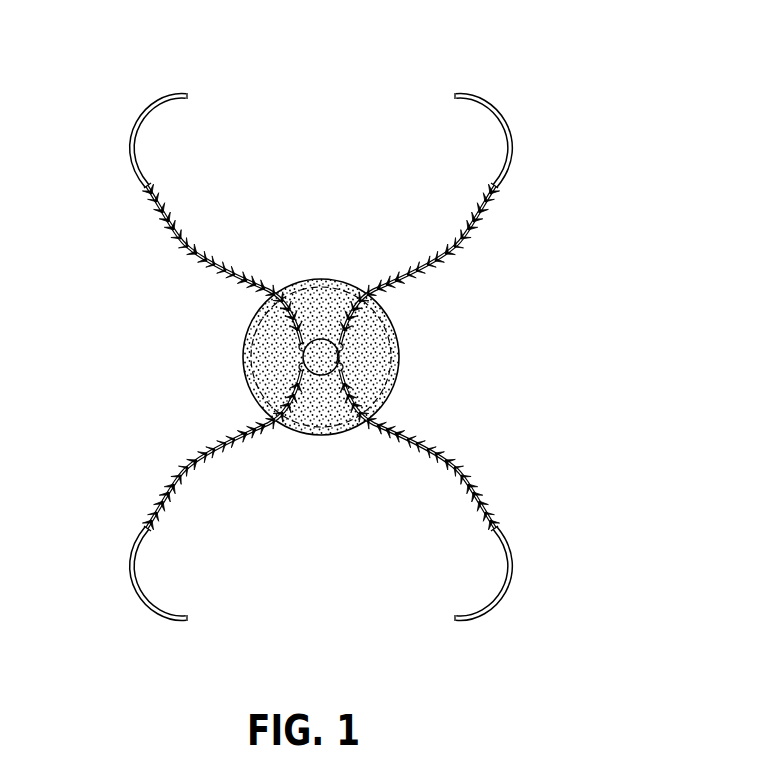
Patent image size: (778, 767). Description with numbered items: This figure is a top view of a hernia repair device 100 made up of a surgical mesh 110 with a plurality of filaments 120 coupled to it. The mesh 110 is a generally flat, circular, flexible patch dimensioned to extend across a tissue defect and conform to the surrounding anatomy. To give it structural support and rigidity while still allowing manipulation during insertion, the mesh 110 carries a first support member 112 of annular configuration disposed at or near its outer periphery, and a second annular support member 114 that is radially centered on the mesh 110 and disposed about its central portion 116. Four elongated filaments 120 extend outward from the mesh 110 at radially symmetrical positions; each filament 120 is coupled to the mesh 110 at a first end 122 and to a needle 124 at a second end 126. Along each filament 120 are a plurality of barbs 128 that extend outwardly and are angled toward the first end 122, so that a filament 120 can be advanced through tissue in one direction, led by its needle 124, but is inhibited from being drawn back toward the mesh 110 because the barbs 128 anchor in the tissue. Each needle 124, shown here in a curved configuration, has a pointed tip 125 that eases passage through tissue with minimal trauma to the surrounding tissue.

The hernia repair device 100 is at (592, 60).
The mesh 110 is at (311, 435).
The support member 112 is at (315, 280).
The second annular support member 114 is at (321, 337).
The central portion 116 is at (350, 357).
The filament 120 is at (185, 265).
The first end 122 is at (296, 362).
The needle 124 is at (125, 143).
The pointed tip 125 is at (187, 95).
The second end 126 is at (155, 192).
The barbs 128 is at (243, 458).